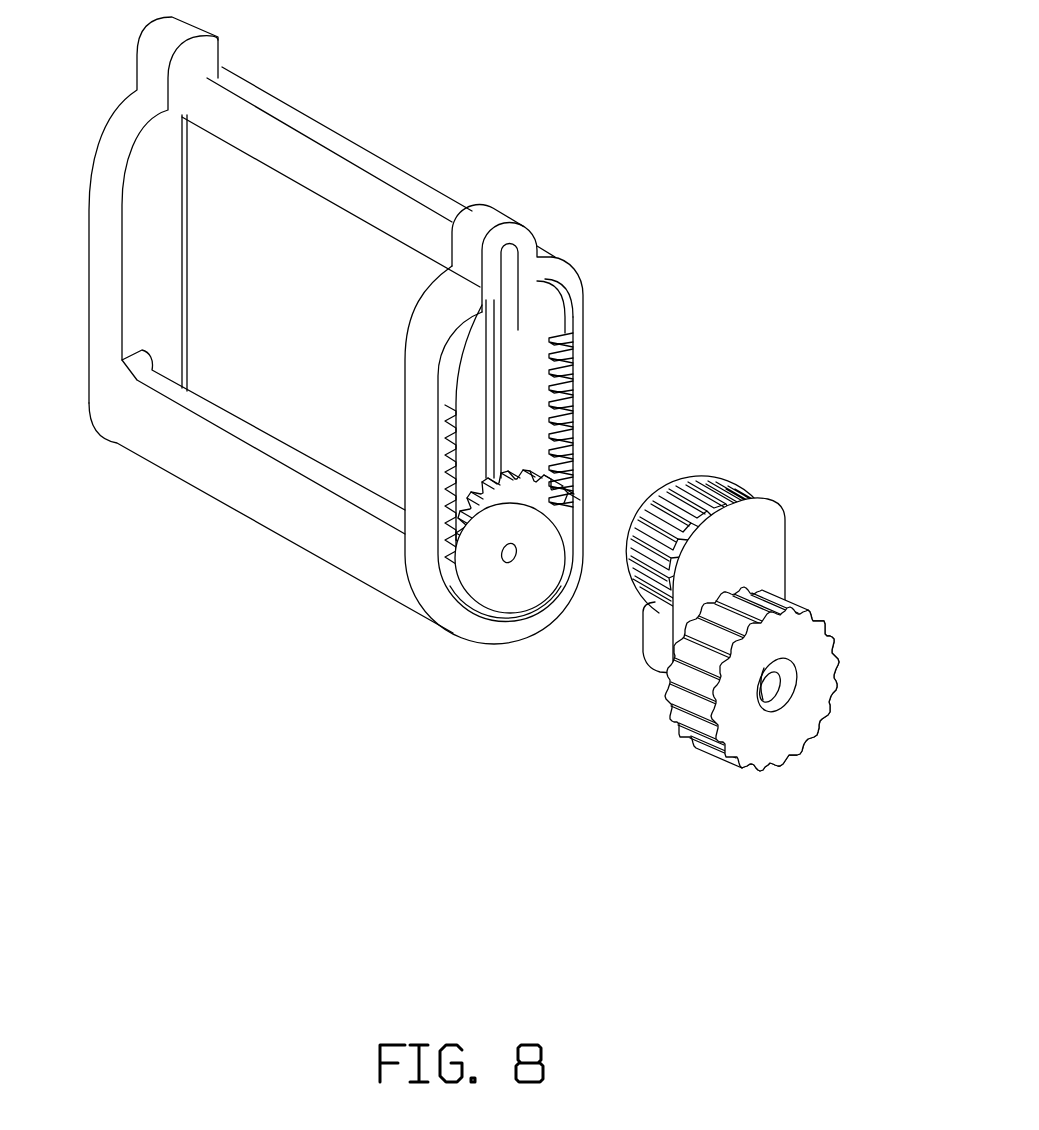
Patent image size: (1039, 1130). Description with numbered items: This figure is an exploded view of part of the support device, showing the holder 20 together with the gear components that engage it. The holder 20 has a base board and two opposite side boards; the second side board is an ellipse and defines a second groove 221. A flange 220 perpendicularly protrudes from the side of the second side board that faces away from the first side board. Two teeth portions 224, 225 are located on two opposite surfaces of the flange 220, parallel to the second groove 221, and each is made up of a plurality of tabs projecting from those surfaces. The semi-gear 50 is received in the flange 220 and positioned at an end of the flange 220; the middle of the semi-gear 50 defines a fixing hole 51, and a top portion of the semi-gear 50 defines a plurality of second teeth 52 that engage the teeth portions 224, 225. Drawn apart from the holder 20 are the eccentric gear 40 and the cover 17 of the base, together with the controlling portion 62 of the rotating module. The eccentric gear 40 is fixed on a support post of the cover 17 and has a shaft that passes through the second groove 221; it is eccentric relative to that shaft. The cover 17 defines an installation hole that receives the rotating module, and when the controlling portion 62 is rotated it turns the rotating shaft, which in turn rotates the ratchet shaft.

The holder 20 is at (355, 186).
The flange 220 is at (541, 271).
The second groove 221 is at (496, 330).
The teeth portion 224 is at (445, 448).
The teeth portion 225 is at (570, 371).
The second teeth 52 is at (548, 445).
The semi-gear 50 is at (492, 603).
The fixing hole 51 is at (515, 558).
The eccentric gear 40 is at (716, 483).
The cover 17 is at (762, 542).
The controlling portion 62 is at (805, 633).